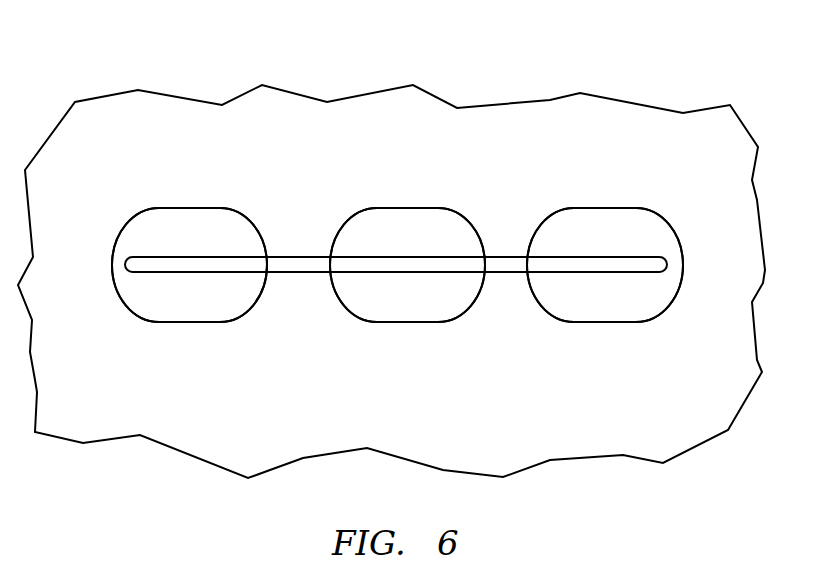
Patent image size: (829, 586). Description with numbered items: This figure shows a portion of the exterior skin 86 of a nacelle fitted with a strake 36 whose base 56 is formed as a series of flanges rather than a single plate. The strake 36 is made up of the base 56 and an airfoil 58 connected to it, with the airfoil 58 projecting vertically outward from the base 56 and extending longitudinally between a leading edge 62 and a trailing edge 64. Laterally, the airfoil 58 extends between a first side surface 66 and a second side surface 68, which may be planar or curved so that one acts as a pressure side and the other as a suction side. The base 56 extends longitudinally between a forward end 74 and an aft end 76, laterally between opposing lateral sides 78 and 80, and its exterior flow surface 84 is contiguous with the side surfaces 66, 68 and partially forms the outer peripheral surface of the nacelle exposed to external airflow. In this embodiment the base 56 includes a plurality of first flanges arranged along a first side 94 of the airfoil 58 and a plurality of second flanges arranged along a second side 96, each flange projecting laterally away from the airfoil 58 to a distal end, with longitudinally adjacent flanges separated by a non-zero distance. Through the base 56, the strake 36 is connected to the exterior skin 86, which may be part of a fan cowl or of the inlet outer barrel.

The strake 36 is at (642, 204).
The base 56 is at (669, 214).
The airfoil 58 is at (501, 256).
The leading edge 62 is at (125, 265).
The trailing edge 64 is at (682, 268).
The first side surface 66 is at (300, 211).
The second side surface 68 is at (300, 313).
The forward end 74 is at (116, 242).
The aft end 76 is at (683, 242).
The lateral side 78 is at (378, 208).
The lateral side 80 is at (382, 321).
The exterior flow surface 84 is at (228, 302).
The exterior skin 86 is at (610, 97).
The first side 94 is at (307, 257).
The second side 96 is at (302, 273).